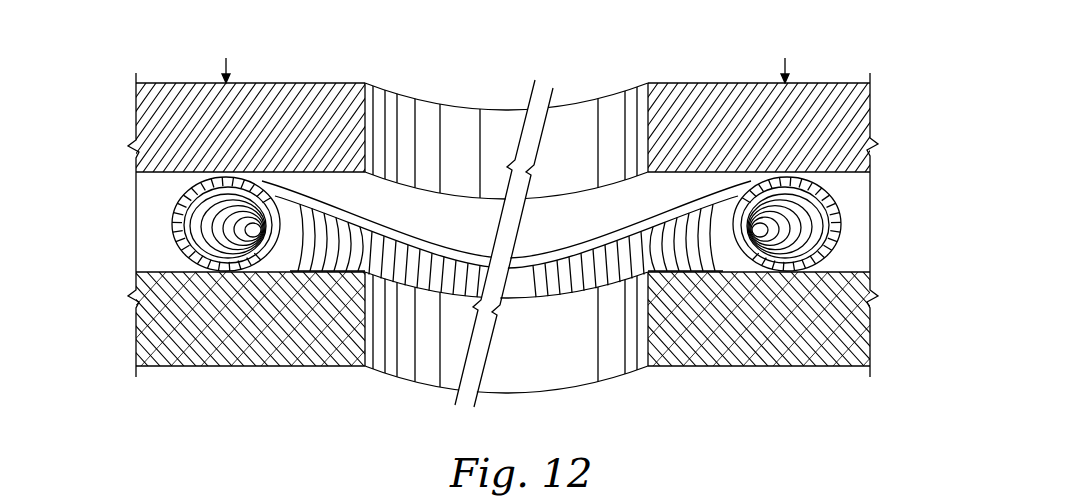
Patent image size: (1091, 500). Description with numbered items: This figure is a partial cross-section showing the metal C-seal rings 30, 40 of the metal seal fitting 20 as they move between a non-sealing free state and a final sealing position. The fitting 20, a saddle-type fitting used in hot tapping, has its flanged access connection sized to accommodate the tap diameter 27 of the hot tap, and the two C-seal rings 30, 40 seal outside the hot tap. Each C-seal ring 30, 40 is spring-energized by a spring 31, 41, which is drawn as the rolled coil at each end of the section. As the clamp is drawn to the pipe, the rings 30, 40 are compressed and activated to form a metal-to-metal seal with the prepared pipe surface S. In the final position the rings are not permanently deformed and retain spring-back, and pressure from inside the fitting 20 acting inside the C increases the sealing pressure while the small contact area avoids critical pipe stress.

The metal seal fitting 20 is at (710, 82).
The tap diameter 27 is at (565, 357).
The metal C-seal ring 30 is at (271, 237).
The metal C-seal ring 40 is at (180, 212).
The spring 31 is at (730, 237).
The spring 41 is at (838, 210).
The prepared pipe surface S is at (175, 266).